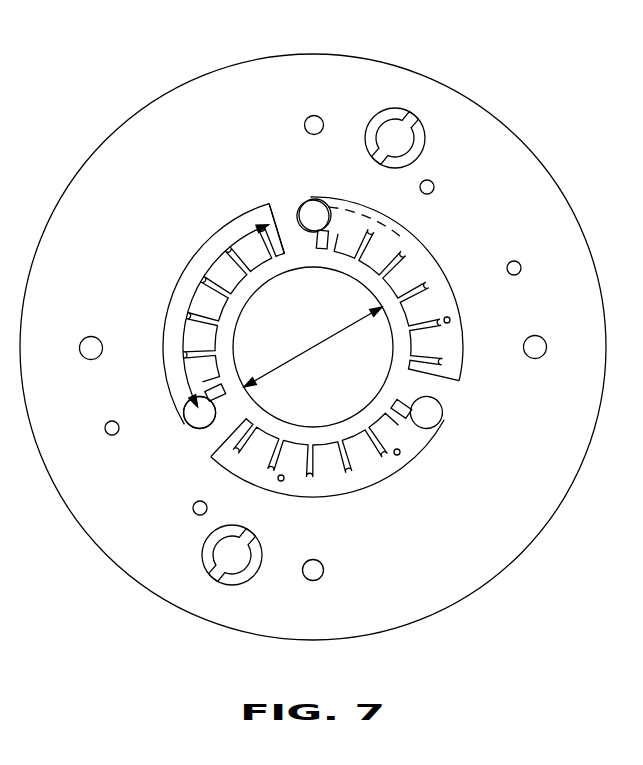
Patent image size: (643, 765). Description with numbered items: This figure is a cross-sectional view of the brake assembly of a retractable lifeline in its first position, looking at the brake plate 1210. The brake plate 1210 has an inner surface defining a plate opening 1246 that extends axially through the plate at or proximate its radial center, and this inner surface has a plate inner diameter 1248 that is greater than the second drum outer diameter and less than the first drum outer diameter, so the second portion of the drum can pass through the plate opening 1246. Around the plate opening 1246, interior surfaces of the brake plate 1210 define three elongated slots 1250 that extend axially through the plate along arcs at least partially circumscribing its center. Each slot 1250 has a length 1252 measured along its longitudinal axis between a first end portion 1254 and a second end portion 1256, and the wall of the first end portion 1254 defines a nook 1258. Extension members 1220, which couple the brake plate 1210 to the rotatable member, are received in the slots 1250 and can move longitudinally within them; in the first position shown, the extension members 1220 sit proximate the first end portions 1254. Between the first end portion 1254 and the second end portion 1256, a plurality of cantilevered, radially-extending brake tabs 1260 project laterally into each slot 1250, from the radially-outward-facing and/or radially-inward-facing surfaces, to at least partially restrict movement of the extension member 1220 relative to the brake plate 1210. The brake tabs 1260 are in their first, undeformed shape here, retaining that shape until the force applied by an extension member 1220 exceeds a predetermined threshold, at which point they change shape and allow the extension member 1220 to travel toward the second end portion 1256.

The brake plate 1210 is at (558, 110).
The extension member 1220 is at (316, 214).
The plate opening 1246 is at (383, 373).
The plate inner diameter 1248 is at (313, 345).
The slot 1250 is at (213, 252).
The slot length 1252 is at (183, 325).
The first end portion 1254 is at (195, 442).
The second end portion 1256 is at (264, 200).
The nook 1258 is at (193, 420).
The brake tab 1260 is at (448, 320).